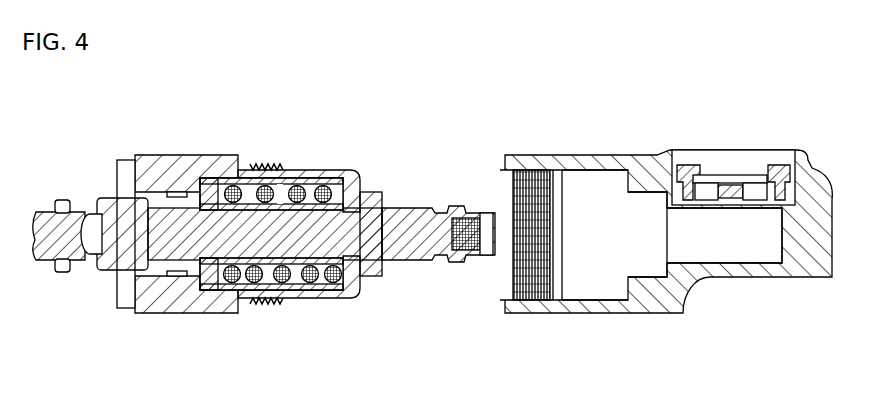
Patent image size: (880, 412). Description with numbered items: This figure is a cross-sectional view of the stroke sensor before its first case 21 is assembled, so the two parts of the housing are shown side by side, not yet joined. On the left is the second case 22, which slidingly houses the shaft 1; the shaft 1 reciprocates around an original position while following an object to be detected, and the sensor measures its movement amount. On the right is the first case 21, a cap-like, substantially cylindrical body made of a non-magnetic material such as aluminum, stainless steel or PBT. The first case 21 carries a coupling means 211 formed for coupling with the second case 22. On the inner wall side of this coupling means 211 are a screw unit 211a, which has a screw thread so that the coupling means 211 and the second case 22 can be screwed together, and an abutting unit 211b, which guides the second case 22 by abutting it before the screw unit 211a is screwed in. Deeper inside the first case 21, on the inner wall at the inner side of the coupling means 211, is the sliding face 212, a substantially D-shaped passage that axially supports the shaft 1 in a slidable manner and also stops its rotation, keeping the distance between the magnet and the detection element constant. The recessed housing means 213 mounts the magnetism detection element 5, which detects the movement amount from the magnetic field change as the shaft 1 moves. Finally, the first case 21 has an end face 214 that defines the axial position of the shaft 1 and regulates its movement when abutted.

The shaft 1 is at (385, 170).
The magnetism detection element 5 is at (722, 183).
The first case 21 is at (632, 232).
The second case 22 is at (160, 306).
The coupling means 211 is at (545, 143).
The screw unit 211a is at (490, 214).
The abutting unit 211b is at (587, 181).
The sliding face 212 is at (712, 252).
The housing means 213 is at (756, 158).
The end face 214 is at (620, 292).